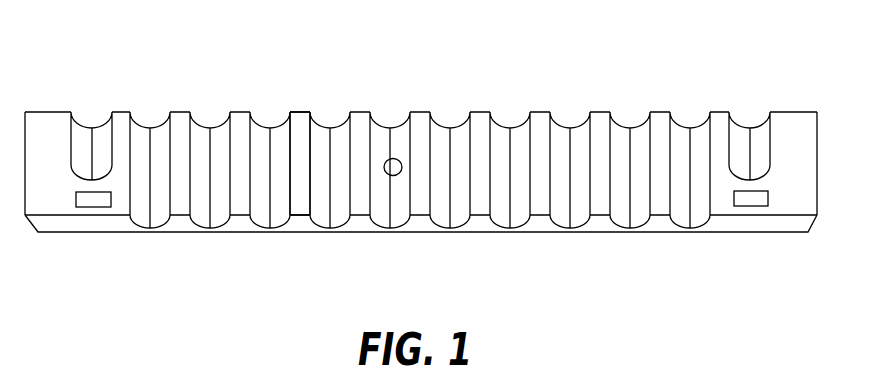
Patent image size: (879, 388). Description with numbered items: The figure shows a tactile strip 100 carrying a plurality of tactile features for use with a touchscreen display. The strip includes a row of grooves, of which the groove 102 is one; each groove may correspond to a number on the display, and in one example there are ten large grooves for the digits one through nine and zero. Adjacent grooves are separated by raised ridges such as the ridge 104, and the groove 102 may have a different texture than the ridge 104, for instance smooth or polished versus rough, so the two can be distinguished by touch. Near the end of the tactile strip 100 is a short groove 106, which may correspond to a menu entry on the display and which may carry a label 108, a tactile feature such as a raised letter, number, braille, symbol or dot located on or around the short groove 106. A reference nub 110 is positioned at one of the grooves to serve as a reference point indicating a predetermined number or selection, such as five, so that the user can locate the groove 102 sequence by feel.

The tactile strip 100 is at (624, 25).
The groove 102 is at (148, 225).
The ridge 104 is at (298, 217).
The short groove 106 is at (737, 123).
The label 108 is at (747, 206).
The reference nub 110 is at (393, 158).